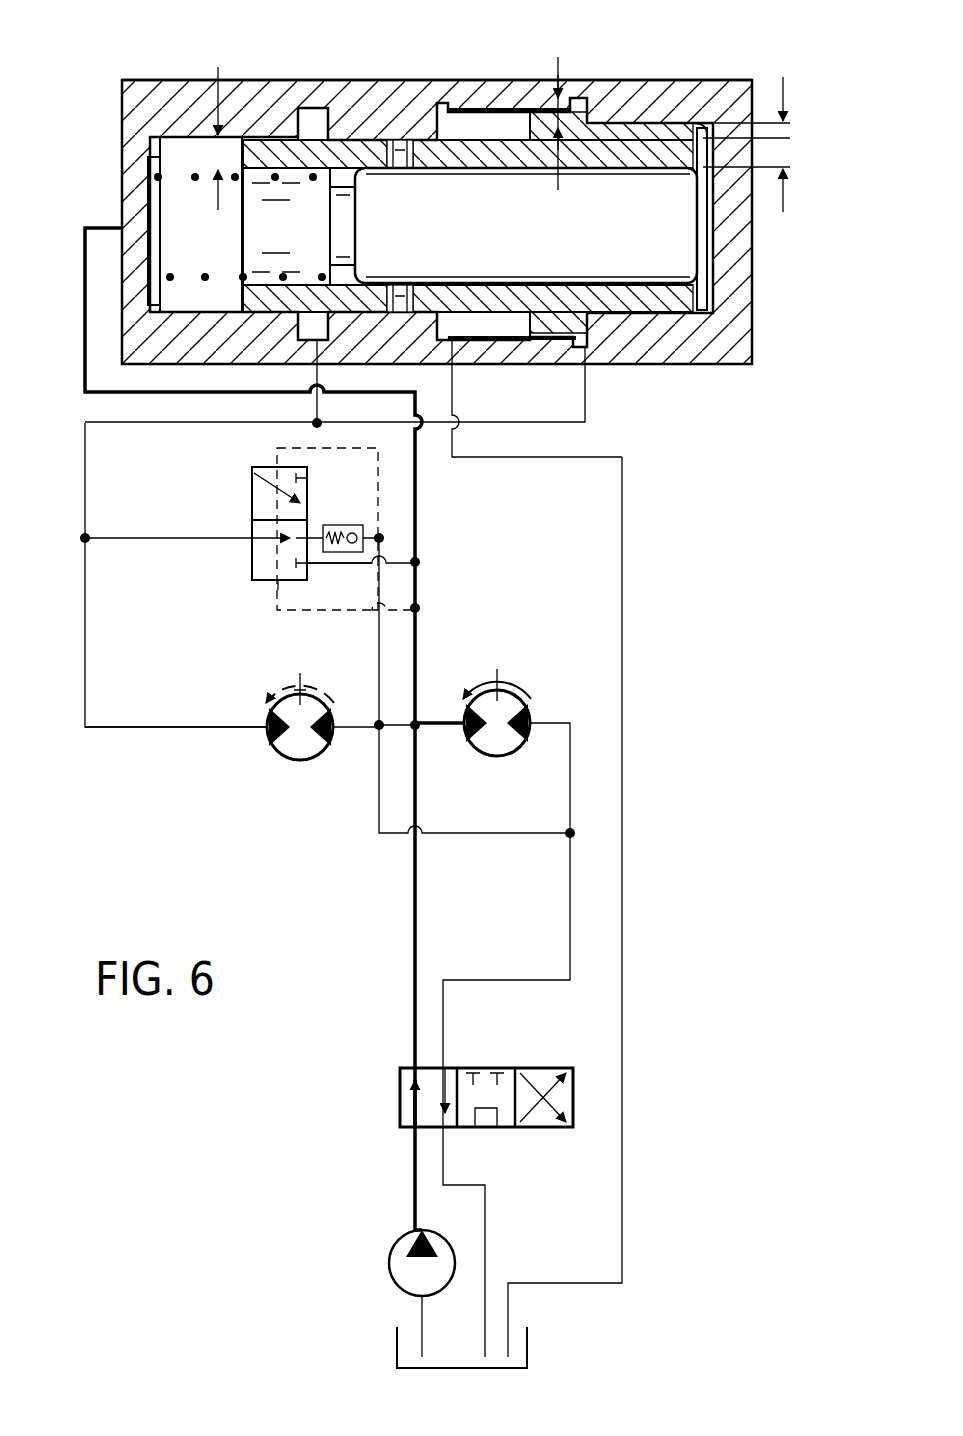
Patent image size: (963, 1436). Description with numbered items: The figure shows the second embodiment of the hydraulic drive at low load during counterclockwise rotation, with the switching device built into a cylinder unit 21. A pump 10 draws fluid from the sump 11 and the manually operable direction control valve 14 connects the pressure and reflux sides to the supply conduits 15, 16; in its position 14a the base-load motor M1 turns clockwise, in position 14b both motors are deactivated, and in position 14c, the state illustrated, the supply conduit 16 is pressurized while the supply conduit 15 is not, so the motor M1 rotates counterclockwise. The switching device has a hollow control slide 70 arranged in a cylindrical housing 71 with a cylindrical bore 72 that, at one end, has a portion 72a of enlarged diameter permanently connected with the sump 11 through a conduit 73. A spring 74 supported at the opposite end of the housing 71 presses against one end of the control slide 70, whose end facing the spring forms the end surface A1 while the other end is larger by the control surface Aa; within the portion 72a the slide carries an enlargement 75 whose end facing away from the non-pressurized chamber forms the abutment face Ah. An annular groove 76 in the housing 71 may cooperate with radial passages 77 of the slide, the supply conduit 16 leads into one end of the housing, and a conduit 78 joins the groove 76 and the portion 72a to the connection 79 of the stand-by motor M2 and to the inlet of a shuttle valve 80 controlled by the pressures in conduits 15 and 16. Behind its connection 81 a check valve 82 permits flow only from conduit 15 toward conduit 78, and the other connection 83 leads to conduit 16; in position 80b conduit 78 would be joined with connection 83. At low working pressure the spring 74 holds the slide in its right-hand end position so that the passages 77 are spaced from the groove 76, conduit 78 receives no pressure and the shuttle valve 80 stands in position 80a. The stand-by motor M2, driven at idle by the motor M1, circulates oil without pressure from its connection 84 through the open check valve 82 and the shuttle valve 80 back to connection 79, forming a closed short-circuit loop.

The pump 10 is at (390, 1270).
The sump 11 is at (527, 1345).
The direction control valve 14 is at (405, 1056).
The valve position for clockwise rotation 14a is at (578, 1093).
The neutral valve position 14b is at (503, 1117).
The valve position for counterclockwise rotation 14c is at (400, 1107).
The supply conduit 15 is at (570, 914).
The supply conduit 16 is at (413, 884).
The hydraulic cylinder unit 21 is at (276, 66).
The control slide 70 is at (362, 134).
The cylindrical housing 71 is at (157, 100).
The cylindrical bore 72 is at (160, 145).
The enlarged-diameter portion 72a is at (490, 120).
The conduit 73 is at (622, 597).
The spring 74 is at (190, 178).
The enlargement 75 is at (537, 128).
The annular groove 76 is at (312, 108).
The radial passages 77 is at (400, 145).
The conduit 78 is at (85, 480).
The connection of stand-by motor 79 is at (168, 730).
The shuttle valve 80 is at (245, 505).
The shuttle valve position 80a is at (252, 567).
The shuttle valve position 80b is at (265, 477).
The connection of shuttle valve 81 is at (314, 535).
The check valve 82 is at (335, 525).
The connection of shuttle valve 83 is at (320, 565).
The connection of stand-by motor 84 is at (355, 730).
The end surface A1 is at (783, 150).
The control surface Aa is at (783, 128).
The abutment face Ah is at (560, 100).
The base-load motor M1 is at (473, 701).
The stand-by motor M2 is at (300, 707).